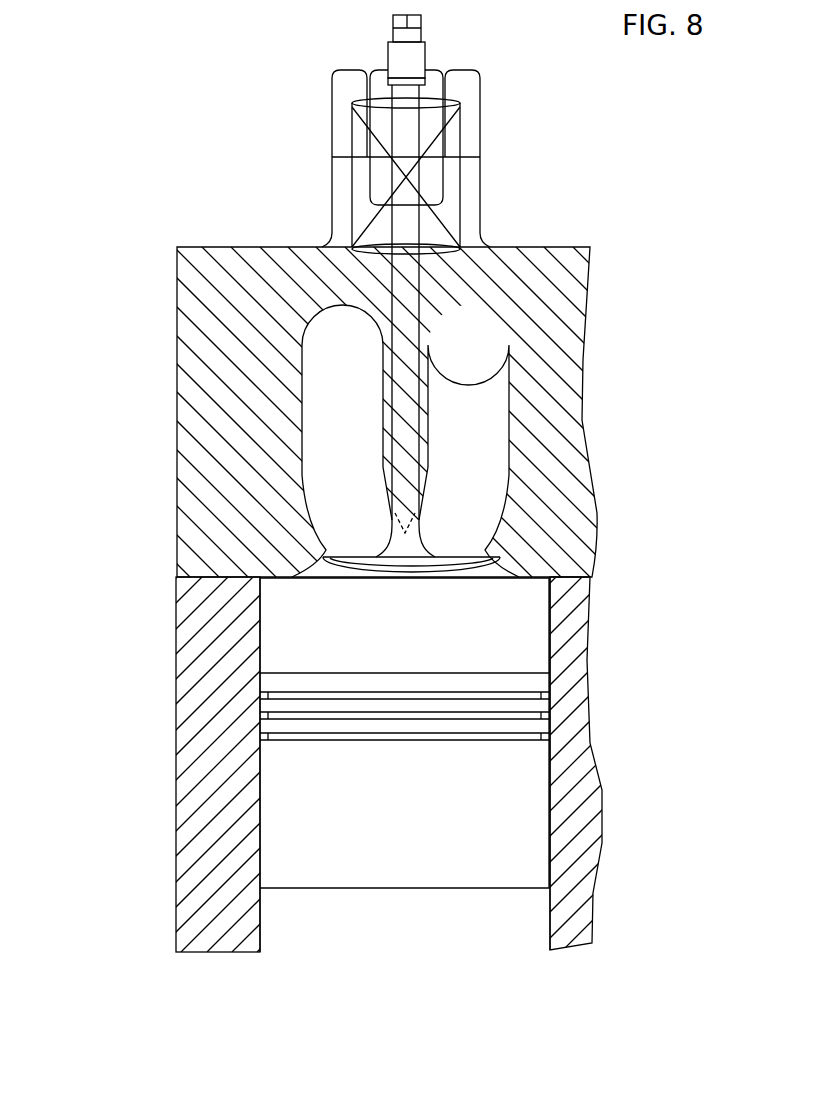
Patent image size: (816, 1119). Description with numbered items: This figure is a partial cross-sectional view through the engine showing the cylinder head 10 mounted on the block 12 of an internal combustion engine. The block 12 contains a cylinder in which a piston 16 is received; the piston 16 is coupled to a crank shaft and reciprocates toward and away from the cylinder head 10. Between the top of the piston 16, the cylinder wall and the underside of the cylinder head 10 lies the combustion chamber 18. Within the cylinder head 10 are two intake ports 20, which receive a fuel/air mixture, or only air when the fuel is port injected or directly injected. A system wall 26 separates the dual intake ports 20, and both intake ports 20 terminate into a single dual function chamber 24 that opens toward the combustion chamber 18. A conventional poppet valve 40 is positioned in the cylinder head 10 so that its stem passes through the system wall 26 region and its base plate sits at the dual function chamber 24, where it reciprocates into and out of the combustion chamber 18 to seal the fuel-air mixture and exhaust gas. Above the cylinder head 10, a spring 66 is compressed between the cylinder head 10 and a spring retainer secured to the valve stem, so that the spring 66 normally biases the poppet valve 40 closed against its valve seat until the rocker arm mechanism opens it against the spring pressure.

The cylinder head 10 is at (555, 335).
The block 12 is at (567, 760).
The piston 16 is at (425, 833).
The combustion chamber 18 is at (513, 615).
The intake port 20 is at (357, 402).
The dual function chamber 24 is at (357, 535).
The system wall 26 is at (428, 408).
The poppet valve 40 is at (385, 575).
The spring 66 is at (482, 180).